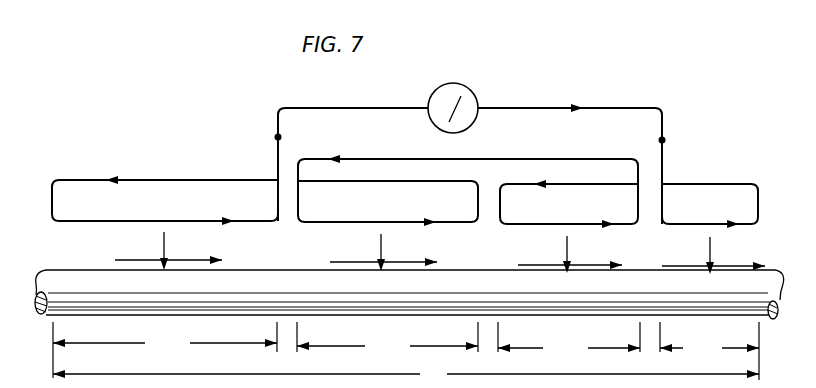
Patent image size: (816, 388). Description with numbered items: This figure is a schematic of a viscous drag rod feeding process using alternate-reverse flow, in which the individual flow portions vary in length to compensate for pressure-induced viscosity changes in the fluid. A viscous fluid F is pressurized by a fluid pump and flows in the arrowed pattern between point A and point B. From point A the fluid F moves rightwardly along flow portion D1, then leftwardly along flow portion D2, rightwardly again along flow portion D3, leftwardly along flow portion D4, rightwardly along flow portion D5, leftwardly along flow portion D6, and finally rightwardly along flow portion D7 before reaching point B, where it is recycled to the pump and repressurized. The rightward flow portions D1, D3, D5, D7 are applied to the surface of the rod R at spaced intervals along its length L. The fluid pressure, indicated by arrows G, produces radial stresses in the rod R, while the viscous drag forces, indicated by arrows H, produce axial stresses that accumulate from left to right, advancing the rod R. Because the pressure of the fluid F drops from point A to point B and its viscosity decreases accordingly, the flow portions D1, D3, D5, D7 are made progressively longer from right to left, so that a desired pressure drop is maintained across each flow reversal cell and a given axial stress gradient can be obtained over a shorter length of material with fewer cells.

The viscous fluid F is at (522, 108).
The point A is at (664, 140).
The point B is at (277, 136).
The flow portion D1 is at (680, 224).
The flow portion D2 is at (722, 184).
The flow portion D3 is at (540, 224).
The flow portion D4 is at (520, 159).
The flow portion D5 is at (342, 222).
The flow portion D6 is at (193, 180).
The flow portion D7 is at (181, 221).
The viscous drag forces H is at (129, 260).
The fluid pressure arrows G is at (165, 246).
The rod R is at (58, 274).
The length of rod L is at (406, 374).